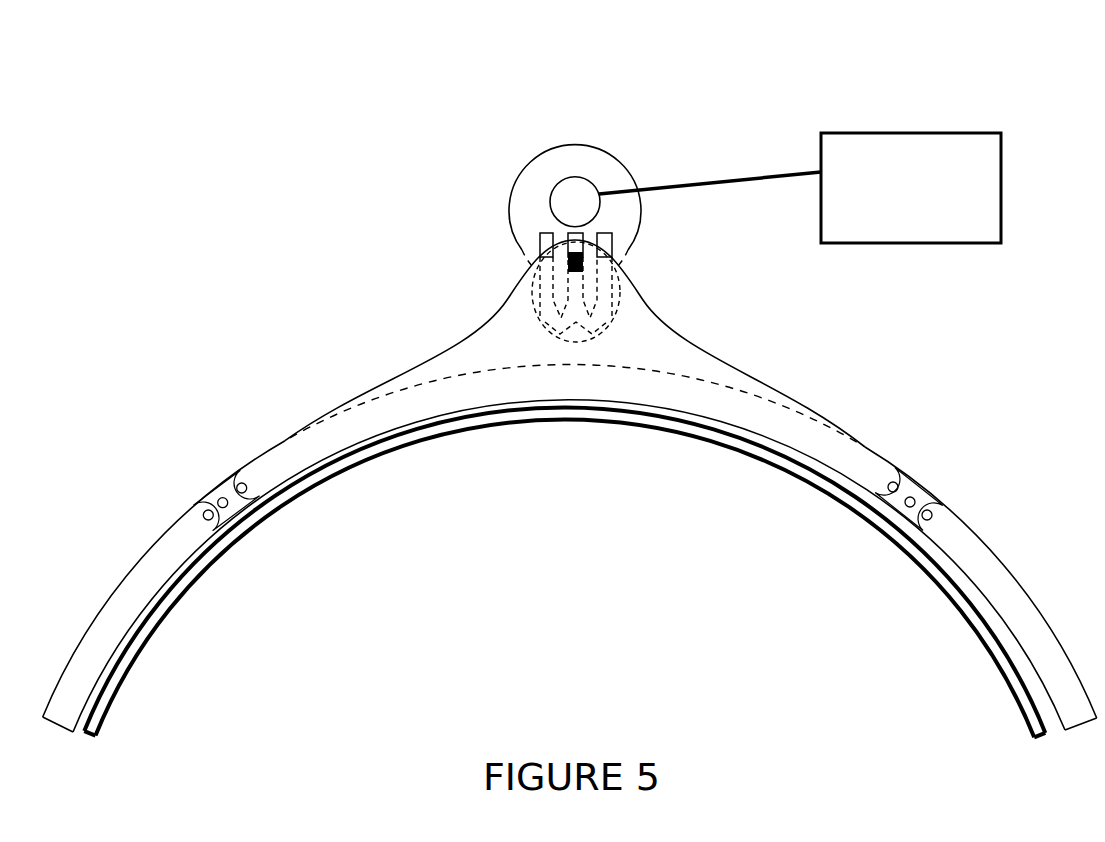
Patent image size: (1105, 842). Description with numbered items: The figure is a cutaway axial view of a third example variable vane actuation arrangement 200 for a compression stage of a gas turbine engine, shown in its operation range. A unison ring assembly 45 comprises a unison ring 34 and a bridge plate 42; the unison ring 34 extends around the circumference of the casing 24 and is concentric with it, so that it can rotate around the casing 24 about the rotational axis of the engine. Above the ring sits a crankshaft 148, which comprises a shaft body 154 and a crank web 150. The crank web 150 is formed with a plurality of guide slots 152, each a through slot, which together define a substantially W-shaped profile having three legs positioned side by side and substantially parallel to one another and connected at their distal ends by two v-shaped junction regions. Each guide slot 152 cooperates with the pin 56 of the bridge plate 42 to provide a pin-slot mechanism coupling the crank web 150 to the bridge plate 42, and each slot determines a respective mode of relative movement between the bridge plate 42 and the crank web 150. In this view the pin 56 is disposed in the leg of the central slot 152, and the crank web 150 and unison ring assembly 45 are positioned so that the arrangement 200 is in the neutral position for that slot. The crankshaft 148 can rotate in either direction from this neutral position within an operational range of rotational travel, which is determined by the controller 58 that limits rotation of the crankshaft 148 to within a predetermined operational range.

The variable vane actuation arrangement 200 is at (182, 202).
The unison ring assembly 45 is at (176, 425).
The unison ring 34 is at (78, 667).
The bridge plate 42 is at (833, 428).
The casing 24 is at (962, 615).
The crankshaft 148 is at (498, 186).
The shaft body 154 is at (574, 189).
The guide slot 152 is at (540, 238).
The pin 56 is at (584, 262).
The crank web 150 is at (540, 320).
The controller 58 is at (963, 220).